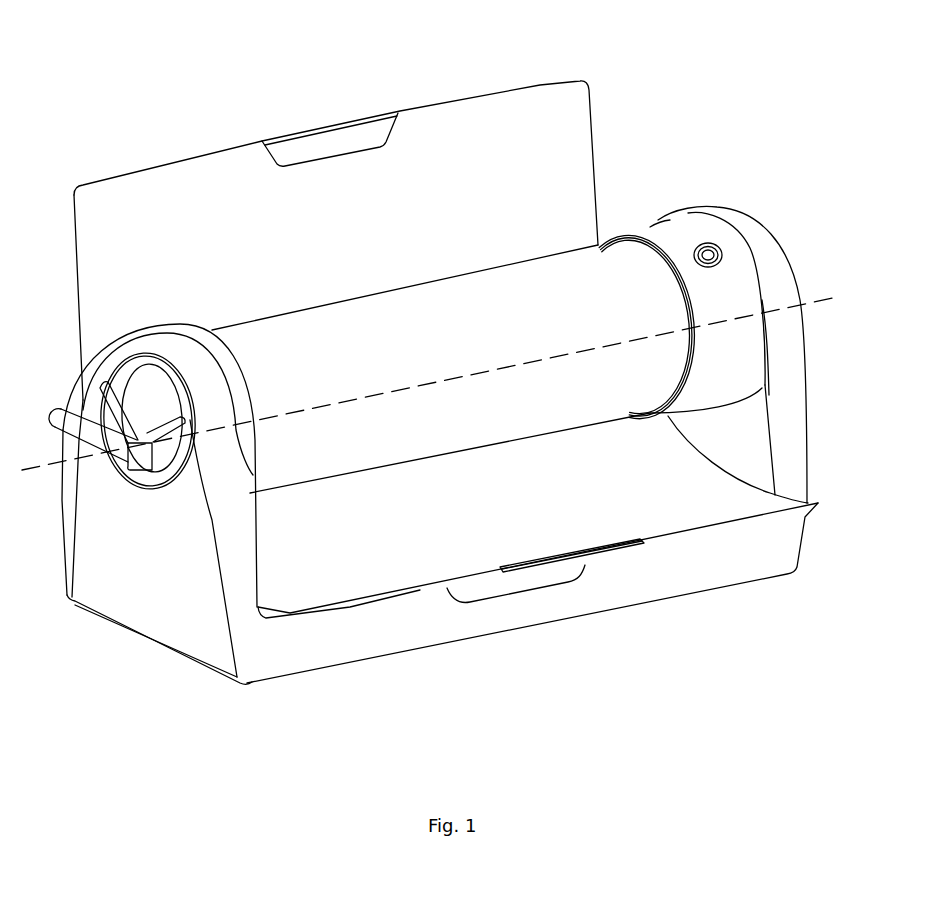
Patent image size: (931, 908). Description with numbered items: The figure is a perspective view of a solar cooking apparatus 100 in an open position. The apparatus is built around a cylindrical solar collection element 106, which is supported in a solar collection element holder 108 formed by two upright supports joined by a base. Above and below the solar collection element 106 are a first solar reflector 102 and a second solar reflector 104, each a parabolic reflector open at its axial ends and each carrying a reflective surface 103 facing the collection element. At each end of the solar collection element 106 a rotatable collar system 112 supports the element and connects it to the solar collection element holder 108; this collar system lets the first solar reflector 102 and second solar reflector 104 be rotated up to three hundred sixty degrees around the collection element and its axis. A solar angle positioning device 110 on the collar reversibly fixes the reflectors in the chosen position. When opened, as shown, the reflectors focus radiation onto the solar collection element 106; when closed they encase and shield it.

The solar cooking apparatus 100 is at (438, 390).
The first solar reflector 102 is at (609, 555).
The reflective surface 103 is at (524, 130).
The second solar reflector 104 is at (426, 102).
The solar collection element 106 is at (568, 306).
The solar collection element holder 108 is at (237, 555).
The solar angle positioning device 110 is at (709, 251).
The rotatable collar system 112 is at (214, 340).